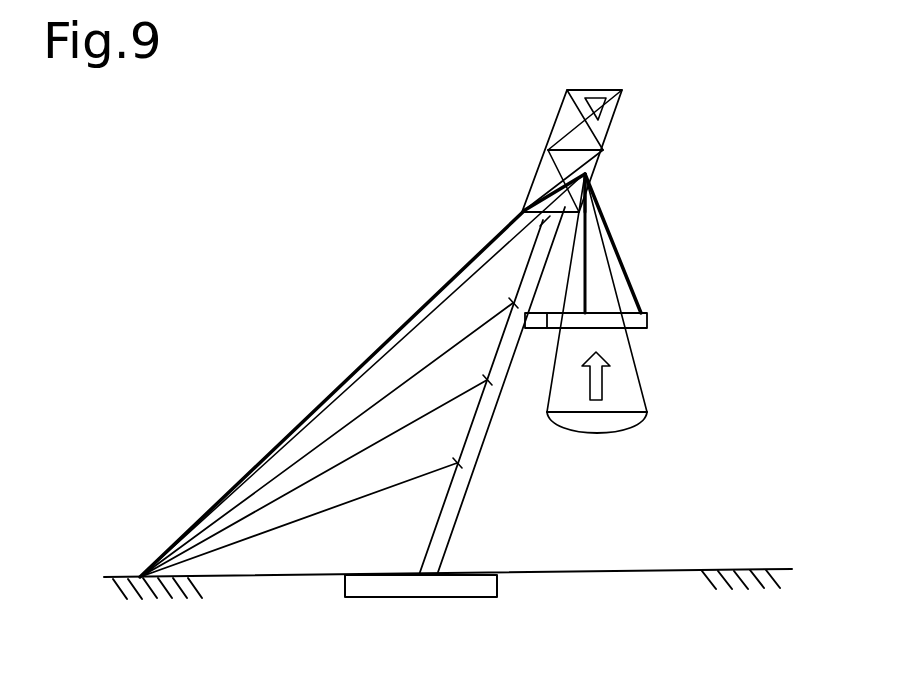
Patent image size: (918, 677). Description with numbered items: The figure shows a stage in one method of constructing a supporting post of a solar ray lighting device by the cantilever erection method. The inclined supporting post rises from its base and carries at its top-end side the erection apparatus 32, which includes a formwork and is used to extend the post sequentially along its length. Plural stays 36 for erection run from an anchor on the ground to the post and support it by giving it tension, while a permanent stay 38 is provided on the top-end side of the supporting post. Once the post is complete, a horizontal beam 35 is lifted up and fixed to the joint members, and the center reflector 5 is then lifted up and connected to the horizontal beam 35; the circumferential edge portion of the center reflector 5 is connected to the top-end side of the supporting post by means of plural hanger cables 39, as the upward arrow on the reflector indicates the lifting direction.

The erection apparatus 32 is at (523, 128).
The permanent stay 38 is at (367, 358).
The stays for erection 36 is at (267, 504).
The hanger cables 39 is at (623, 263).
The horizontal beam 35 is at (647, 322).
The center reflector 5 is at (622, 437).